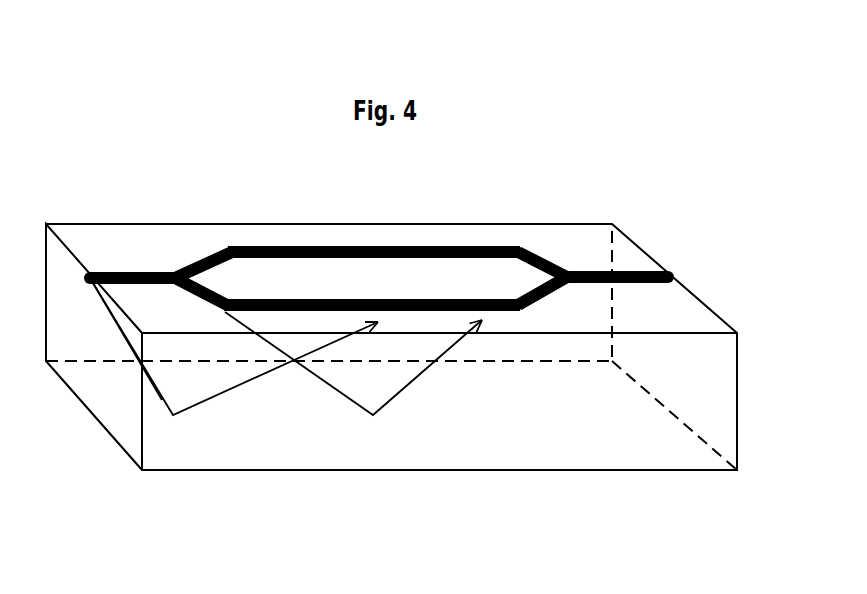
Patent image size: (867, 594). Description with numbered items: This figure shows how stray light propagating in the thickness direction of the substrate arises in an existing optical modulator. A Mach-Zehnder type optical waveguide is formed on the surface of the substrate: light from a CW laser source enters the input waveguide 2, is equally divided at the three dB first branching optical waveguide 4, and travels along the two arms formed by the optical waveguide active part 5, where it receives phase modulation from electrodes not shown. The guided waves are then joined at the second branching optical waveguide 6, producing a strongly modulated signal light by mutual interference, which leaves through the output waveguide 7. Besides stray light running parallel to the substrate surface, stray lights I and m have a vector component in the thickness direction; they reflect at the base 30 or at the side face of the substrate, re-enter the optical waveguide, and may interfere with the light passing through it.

The input waveguide 2 is at (125, 275).
The 3 dB branching optical waveguide 4 is at (180, 270).
The optical waveguide active part 5 is at (348, 299).
The second branching optical waveguide 6 is at (577, 270).
The output waveguide 7 is at (663, 270).
The base 30 is at (287, 432).
The stray light I is at (162, 400).
The stray light m is at (415, 382).